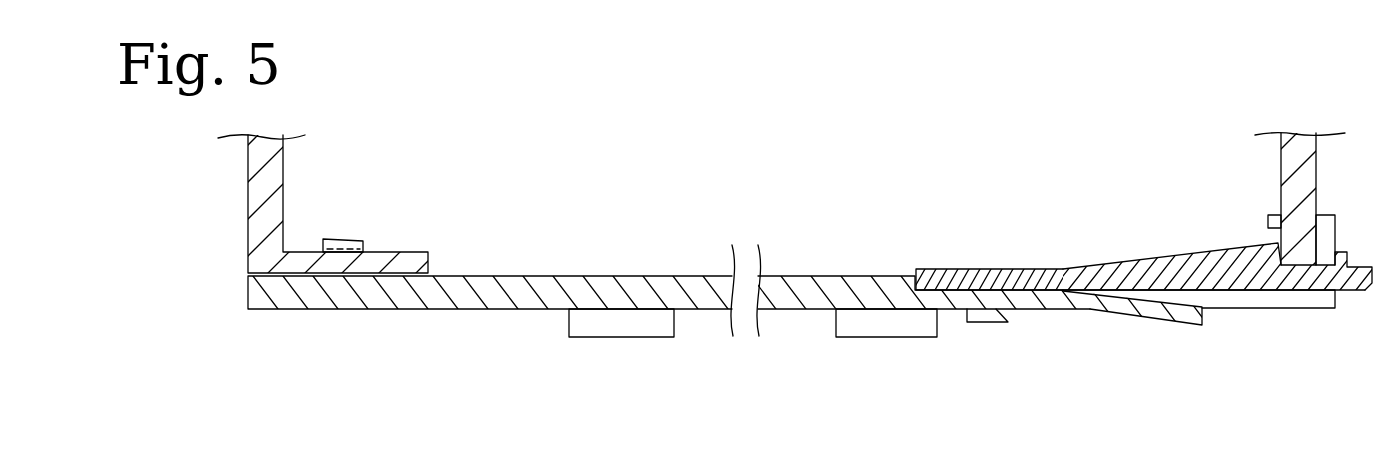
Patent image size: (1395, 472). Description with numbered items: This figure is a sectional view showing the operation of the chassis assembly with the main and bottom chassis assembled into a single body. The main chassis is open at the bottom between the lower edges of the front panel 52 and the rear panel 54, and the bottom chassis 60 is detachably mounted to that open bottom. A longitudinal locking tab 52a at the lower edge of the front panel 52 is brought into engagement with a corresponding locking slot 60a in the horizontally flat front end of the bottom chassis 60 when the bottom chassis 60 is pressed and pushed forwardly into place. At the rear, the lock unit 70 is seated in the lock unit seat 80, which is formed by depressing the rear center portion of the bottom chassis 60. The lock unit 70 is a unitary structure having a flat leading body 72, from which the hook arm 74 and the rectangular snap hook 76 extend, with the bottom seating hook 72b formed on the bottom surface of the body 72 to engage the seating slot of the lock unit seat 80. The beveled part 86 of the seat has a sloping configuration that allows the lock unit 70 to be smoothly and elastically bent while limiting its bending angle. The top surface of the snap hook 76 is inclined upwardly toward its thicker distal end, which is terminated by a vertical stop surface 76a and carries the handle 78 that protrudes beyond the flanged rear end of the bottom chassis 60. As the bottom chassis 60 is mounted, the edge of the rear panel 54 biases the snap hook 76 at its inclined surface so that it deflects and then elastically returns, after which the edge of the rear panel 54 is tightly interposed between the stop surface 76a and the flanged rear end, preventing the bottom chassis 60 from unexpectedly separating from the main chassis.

The front panel 52 is at (258, 190).
The locking tab 52a is at (415, 258).
The rear panel 54 is at (1295, 155).
The bottom chassis 60 is at (500, 322).
The locking slot 60a is at (323, 238).
The lock unit 70 is at (1148, 280).
The leading body 72 is at (963, 268).
The bottom seating hook 72b is at (992, 320).
The hook arm 74 is at (1347, 235).
The snap hook 76 is at (1222, 250).
The stop surface 76a is at (1273, 247).
The handle 78 is at (1362, 292).
The lock unit seat 80 is at (913, 258).
The beveled part 86 is at (1170, 322).